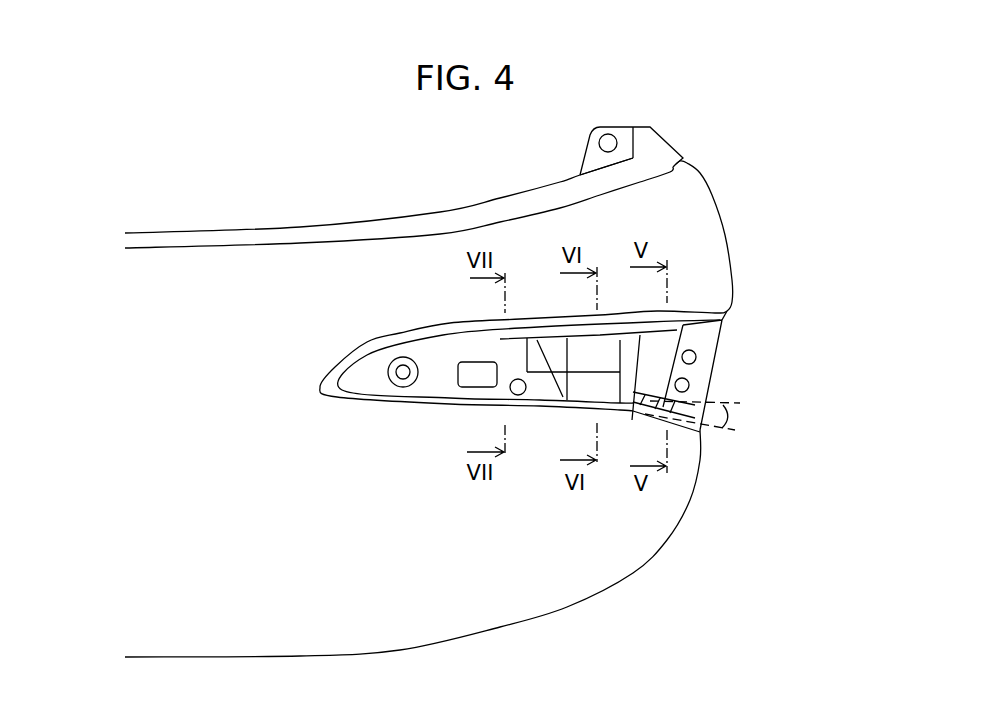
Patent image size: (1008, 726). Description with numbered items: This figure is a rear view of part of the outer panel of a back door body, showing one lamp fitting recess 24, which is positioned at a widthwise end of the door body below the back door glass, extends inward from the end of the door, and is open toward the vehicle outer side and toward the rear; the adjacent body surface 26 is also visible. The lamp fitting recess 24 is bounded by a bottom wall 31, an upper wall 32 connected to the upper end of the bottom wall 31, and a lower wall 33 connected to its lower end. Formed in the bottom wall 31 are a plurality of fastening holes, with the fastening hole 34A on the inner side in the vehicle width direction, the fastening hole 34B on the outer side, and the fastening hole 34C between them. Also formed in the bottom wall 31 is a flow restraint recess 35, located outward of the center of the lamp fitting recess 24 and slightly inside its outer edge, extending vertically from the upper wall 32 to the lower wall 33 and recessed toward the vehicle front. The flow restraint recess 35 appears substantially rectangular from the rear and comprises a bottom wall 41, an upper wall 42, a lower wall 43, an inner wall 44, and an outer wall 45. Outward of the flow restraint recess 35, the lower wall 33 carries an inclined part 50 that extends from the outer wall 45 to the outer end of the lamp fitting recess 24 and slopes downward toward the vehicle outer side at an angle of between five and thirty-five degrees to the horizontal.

The lamp fitting recess 24 is at (711, 340).
The side cover 26 is at (577, 575).
The bottom wall 31 is at (427, 362).
The upper wall 32 is at (443, 335).
The lower wall 33 is at (447, 407).
The fastening hole 34A is at (400, 378).
The fastening hole 34B is at (690, 383).
The fastening hole 34C is at (518, 395).
The flow restraint recess 35 is at (583, 388).
The bottom wall 41 is at (650, 311).
The upper wall 42 is at (613, 345).
The lower wall 43 is at (605, 405).
The inner wall 44 is at (535, 343).
The outer wall 45 is at (700, 332).
The inclined part 50 is at (675, 423).